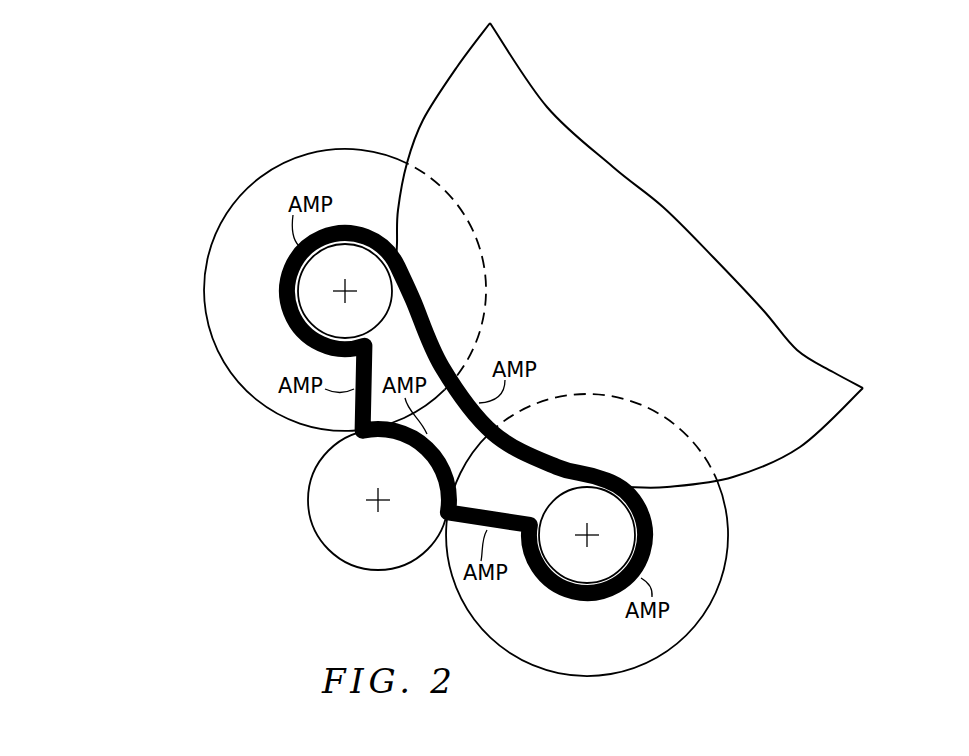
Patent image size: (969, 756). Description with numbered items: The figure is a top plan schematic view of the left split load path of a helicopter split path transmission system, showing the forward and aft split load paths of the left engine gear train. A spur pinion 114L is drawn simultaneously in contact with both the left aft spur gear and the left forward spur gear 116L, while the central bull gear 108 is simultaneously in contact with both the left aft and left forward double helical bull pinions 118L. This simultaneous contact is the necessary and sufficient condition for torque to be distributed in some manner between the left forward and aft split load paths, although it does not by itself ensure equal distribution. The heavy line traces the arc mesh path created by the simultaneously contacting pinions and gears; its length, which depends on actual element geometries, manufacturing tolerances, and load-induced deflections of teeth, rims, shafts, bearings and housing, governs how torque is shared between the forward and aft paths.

The central bull gear 108 is at (597, 327).
The spur pinion 114L is at (333, 525).
The left aft and left forward spur gears 116L is at (740, 629).
The left aft and left forward double helical bull pinions 118L is at (750, 557).